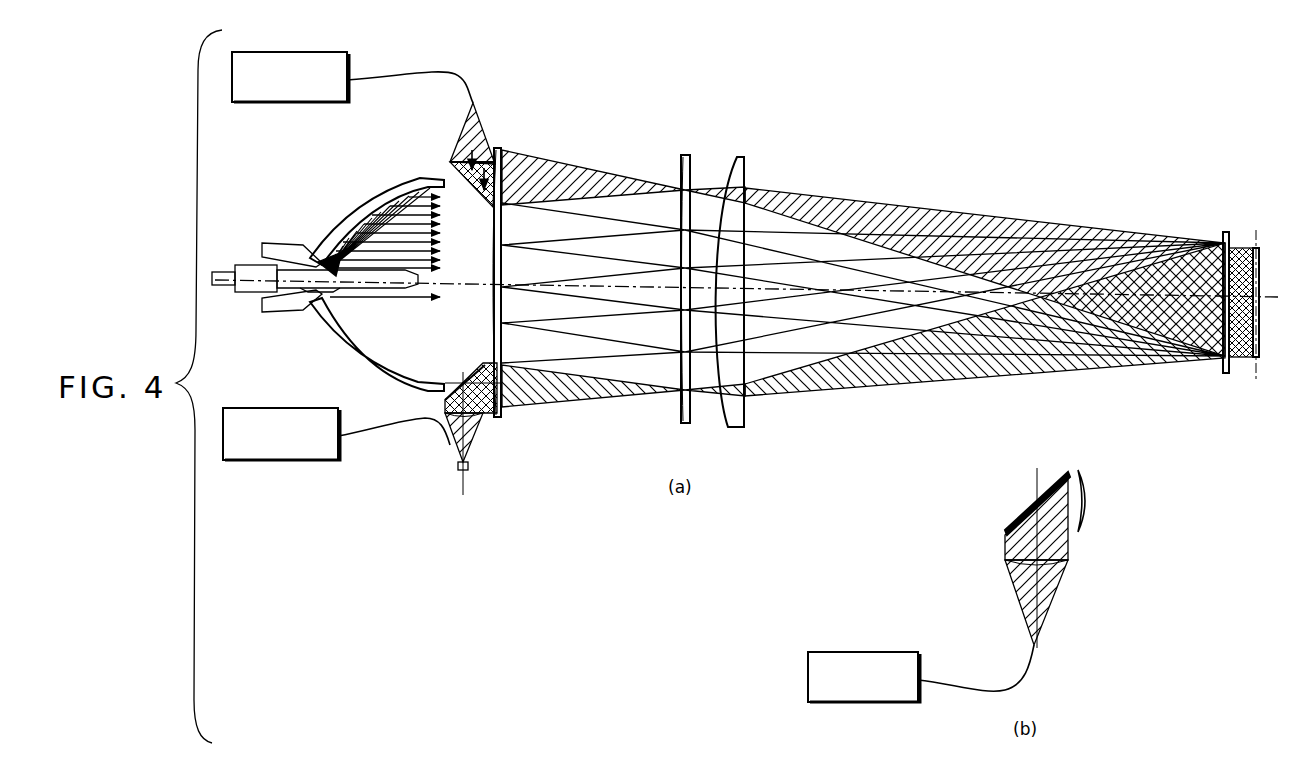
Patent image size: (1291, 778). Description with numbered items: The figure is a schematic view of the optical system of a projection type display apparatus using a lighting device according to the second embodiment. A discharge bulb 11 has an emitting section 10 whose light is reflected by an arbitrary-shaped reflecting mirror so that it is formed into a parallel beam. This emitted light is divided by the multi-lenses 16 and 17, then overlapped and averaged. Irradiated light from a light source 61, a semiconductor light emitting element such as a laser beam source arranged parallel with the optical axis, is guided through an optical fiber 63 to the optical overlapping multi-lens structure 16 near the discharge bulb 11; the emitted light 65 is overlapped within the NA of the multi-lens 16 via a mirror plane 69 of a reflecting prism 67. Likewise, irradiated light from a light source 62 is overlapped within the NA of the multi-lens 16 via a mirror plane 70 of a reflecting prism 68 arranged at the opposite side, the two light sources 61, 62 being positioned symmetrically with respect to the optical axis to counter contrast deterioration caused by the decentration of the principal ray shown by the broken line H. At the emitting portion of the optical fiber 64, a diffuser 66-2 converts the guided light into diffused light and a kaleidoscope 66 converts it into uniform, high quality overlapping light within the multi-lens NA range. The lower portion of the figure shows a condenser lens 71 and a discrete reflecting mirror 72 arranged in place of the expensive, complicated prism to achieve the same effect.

The emitting section 10 is at (310, 255).
The discharge bulb 11 is at (388, 193).
The multi-lens 16 is at (500, 157).
The multi-lens 17 is at (682, 162).
The light source 61 is at (310, 98).
The light source 62 is at (303, 455).
The optical fiber 63 is at (430, 72).
The optical fiber 64 is at (390, 427).
The emitted light 65 is at (478, 124).
The kaleidoscope 66 is at (485, 432).
The diffuser 66-2 is at (466, 472).
The reflecting prism 67 is at (452, 164).
The reflecting prism 68 is at (473, 363).
The mirror plane 69 is at (480, 203).
The mirror plane 70 is at (448, 396).
The condenser lens 71 is at (1063, 568).
The discrete reflecting mirror 72 is at (1018, 521).
The principal ray H is at (872, 217).